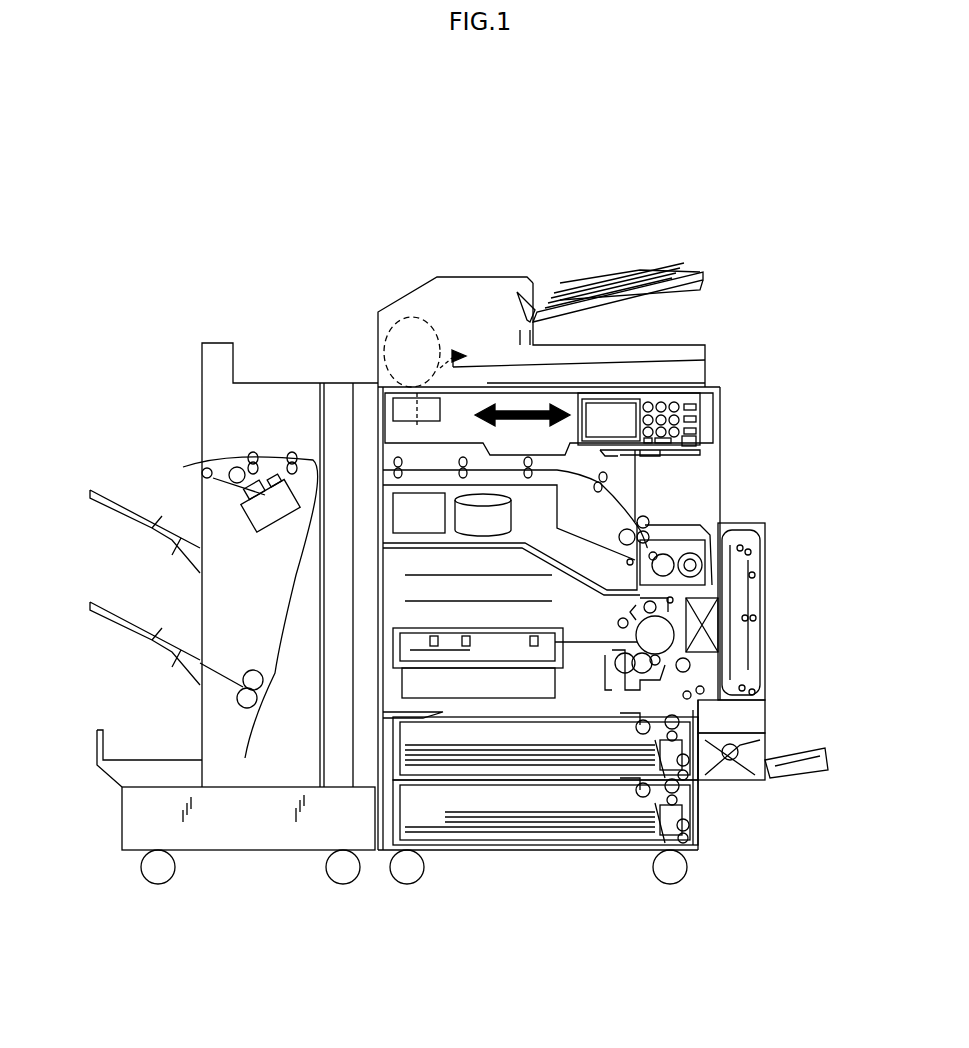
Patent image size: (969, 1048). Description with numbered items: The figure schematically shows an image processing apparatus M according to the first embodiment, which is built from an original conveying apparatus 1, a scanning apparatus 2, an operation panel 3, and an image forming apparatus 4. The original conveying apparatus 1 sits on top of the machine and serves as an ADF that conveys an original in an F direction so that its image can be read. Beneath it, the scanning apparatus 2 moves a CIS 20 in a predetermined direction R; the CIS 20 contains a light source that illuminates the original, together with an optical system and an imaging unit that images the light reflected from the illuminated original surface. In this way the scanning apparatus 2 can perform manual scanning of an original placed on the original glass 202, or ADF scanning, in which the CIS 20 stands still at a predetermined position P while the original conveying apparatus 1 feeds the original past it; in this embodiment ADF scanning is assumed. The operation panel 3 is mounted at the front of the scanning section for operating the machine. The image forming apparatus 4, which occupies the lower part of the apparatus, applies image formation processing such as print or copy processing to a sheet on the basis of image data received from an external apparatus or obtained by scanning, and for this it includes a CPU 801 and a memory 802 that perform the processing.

The image processing apparatus M is at (307, 217).
The original conveying apparatus 1 is at (730, 267).
The scanning apparatus 2 is at (730, 390).
The operation panel 3 is at (680, 446).
The image forming apparatus 4 is at (808, 457).
The CIS 20 is at (380, 408).
The original glass 202 is at (442, 408).
The predetermined position P is at (423, 418).
The F direction F is at (413, 293).
The predetermined direction R is at (513, 407).
The CPU 801 is at (380, 510).
The memory 802 is at (630, 560).